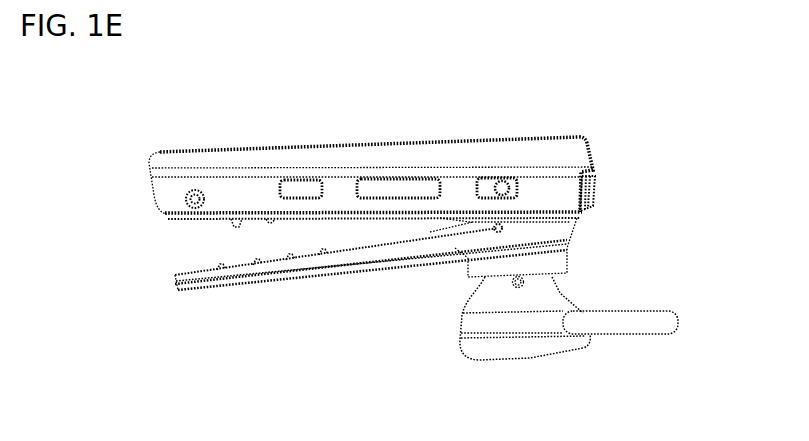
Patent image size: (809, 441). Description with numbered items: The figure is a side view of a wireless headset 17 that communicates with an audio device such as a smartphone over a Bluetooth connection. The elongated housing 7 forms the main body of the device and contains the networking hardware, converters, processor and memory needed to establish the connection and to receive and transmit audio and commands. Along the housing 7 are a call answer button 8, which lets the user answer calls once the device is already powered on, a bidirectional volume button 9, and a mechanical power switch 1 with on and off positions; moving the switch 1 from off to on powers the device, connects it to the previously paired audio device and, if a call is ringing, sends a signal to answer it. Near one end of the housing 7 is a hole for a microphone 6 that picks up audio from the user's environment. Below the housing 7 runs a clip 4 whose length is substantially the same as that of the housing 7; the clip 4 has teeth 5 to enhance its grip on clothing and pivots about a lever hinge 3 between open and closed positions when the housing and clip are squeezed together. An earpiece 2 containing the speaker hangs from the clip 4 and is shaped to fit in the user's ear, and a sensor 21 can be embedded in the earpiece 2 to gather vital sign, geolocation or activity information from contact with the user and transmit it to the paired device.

The mechanical power switch 1 is at (497, 183).
The earpiece 2 is at (513, 297).
The lever hinge 3 is at (505, 228).
The clip 4 is at (308, 267).
The teeth 5 is at (237, 227).
The microphone 6 is at (193, 202).
The housing 7 is at (352, 147).
The call answer button 8 is at (283, 175).
The bidirectional volume button 9 is at (392, 200).
The wireless headset 17 is at (692, 218).
The sensor 21 is at (533, 305).